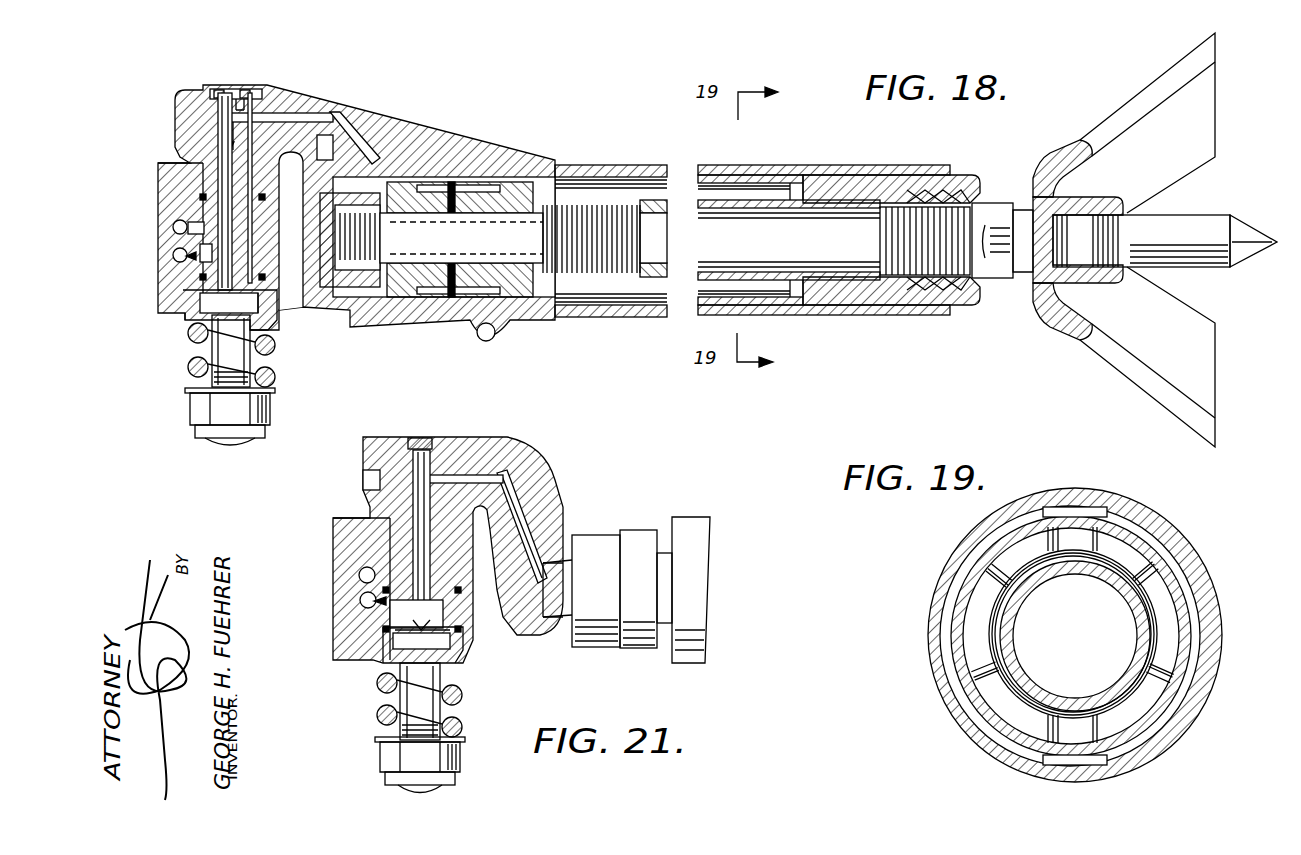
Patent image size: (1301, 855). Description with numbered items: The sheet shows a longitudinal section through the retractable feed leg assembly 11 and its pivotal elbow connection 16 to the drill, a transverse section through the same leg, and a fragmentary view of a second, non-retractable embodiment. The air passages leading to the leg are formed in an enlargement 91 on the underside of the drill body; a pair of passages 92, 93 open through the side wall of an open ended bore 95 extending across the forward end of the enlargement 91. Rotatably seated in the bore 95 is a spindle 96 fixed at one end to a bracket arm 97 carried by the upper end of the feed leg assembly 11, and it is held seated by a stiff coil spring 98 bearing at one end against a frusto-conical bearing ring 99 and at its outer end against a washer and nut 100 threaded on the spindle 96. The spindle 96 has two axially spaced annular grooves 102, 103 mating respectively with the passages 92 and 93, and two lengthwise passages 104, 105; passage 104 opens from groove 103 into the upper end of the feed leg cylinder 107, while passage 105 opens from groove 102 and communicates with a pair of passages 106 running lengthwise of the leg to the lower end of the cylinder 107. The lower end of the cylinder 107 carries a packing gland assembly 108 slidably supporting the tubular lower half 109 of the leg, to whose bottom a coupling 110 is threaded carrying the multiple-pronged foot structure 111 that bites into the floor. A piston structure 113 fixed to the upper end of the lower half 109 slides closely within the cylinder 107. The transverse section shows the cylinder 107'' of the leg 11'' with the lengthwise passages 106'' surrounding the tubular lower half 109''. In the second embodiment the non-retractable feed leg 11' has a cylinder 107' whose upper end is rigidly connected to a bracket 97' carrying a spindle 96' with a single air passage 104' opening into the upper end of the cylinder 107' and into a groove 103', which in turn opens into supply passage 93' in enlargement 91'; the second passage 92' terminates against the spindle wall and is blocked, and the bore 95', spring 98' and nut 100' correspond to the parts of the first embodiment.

In FIG. 18, the feed leg assembly 11 is at (784, 145).
In FIG. 18, the valve assembly 16 is at (172, 330).
In FIG. 18, the enlargement 91 is at (160, 217).
In FIG. 18, the passage 92 is at (148, 223).
In FIG. 18, the passage 93 is at (152, 261).
In FIG. 18, the bore 95 is at (194, 310).
In FIG. 18, the spindle 96 is at (271, 351).
In FIG. 18, the bracket arm 97 is at (356, 194).
In FIG. 18, the coil spring 98 is at (259, 355).
In FIG. 18, the frusto-conical bearing ring 99 is at (270, 318).
In FIG. 18, the washer and nut 100 is at (202, 416).
In FIG. 18, the annular groove 102 is at (175, 250).
In FIG. 18, the annular groove 103 is at (157, 268).
In FIG. 18, the passage 104 is at (272, 190).
In FIG. 18, the passage 105 is at (346, 128).
In FIG. 18, the passages 106 is at (679, 212).
In FIG. 18, the feed leg cylinder 107 is at (752, 220).
In FIG. 18, the packing gland assembly 108 is at (972, 312).
In FIG. 18, the tubular lower half 109 is at (711, 240).
In FIG. 18, the coupling 110 is at (992, 205).
In FIG. 18, the multiple-pronged foot structure 111 is at (1118, 365).
In FIG. 18, the piston structure 113 is at (523, 285).
In FIG. 21, the bracket 97' is at (472, 550).
In FIG. 21, the enlargement 91' is at (332, 590).
In FIG. 21, the air passage 104' is at (393, 510).
In FIG. 21, the air flow passage 92' is at (324, 572).
In FIG. 21, the supply passage 93' is at (331, 599).
In FIG. 21, the retaining nut 95' is at (438, 611).
In FIG. 21, the groove 103' is at (452, 625).
In FIG. 21, the spindle 96' is at (459, 701).
In FIG. 21, the spring (modified) 98' is at (448, 705).
In FIG. 21, the lock nut 100' is at (420, 765).
In FIG. 21, the piston cylinder 107' is at (626, 604).
In FIG. 21, the non-retractable feed leg 11' is at (732, 520).
In FIG. 19, the feed leg cylinder 107'' is at (1080, 635).
In FIG. 19, the passages 106'' is at (1071, 632).
In FIG. 19, the tubular lower half 109'' is at (1072, 635).
In FIG. 19, the feed leg assembly 11'' is at (897, 559).